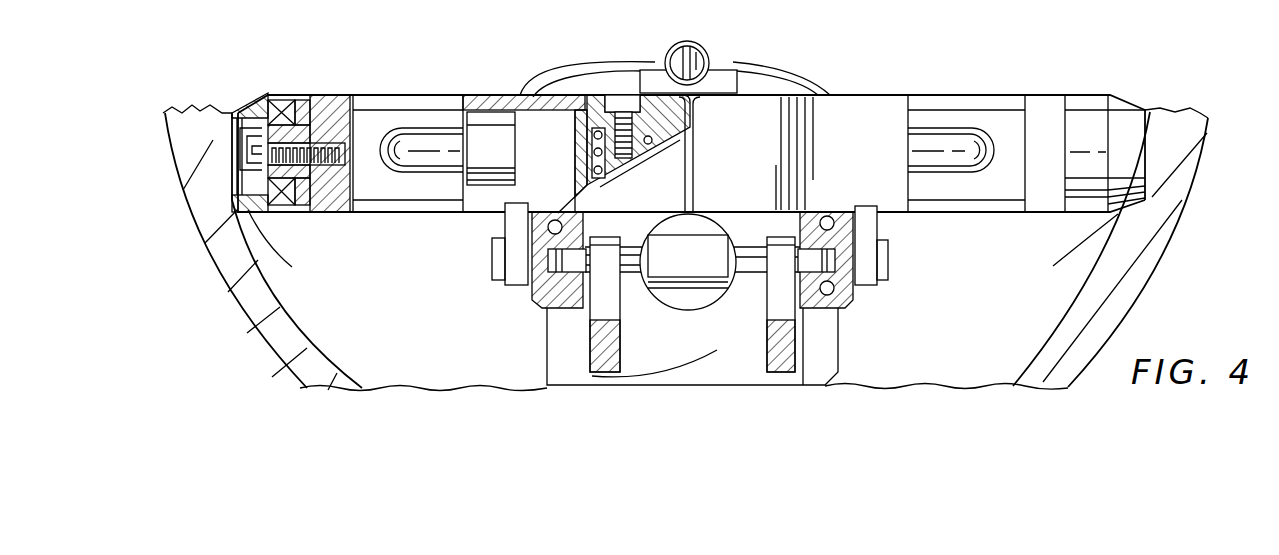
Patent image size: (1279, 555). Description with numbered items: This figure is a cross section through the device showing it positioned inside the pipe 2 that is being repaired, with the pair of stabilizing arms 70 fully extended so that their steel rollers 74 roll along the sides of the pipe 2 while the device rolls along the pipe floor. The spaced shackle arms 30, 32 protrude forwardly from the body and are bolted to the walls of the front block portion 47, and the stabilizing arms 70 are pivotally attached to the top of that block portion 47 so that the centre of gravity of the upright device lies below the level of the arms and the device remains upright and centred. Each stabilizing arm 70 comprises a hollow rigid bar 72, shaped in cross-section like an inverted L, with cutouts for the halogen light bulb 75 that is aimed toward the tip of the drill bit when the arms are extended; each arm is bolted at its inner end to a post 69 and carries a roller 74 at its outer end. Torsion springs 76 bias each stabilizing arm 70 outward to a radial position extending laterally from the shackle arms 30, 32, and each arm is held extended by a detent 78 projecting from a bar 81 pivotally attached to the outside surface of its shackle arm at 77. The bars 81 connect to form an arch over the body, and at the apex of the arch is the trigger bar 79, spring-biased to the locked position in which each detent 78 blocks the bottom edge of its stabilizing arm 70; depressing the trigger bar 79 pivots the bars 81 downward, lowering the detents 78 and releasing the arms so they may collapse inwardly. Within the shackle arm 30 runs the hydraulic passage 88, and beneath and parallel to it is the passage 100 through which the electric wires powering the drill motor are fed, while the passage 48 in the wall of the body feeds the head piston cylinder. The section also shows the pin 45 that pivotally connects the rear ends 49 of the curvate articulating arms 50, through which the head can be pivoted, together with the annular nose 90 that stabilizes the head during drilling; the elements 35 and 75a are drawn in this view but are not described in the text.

The pipe 2 is at (248, 283).
The shackle arm 30 is at (852, 290).
The shackle arm 32 is at (532, 302).
The end cap 35 is at (350, 0).
The pin 45 is at (403, 82).
The front block portion 47 is at (556, 378).
The passage 48 is at (1083, 106).
The rear ends 49 is at (695, 106).
The articulating arms 50 is at (381, 102).
The post 69 is at (603, 108).
The stabilizing arm 70 is at (405, 224).
The hollow rigid bar 72 is at (437, 104).
The steel roller 74 is at (683, 254).
The halogen light bulb 75 is at (382, 172).
The slot insert 75a is at (495, 140).
The torsion spring 76 is at (590, 149).
The pivot 77 is at (505, 276).
The detent 78 is at (505, 196).
The trigger bar 79 is at (712, 54).
The bar 81 is at (552, 74).
The hydraulic passage 88 is at (834, 222).
The annular nose 90 is at (586, 211).
The passage 100 is at (840, 300).